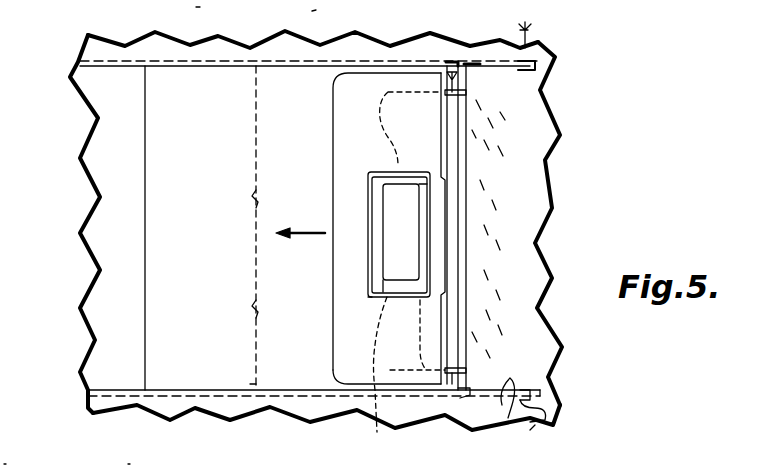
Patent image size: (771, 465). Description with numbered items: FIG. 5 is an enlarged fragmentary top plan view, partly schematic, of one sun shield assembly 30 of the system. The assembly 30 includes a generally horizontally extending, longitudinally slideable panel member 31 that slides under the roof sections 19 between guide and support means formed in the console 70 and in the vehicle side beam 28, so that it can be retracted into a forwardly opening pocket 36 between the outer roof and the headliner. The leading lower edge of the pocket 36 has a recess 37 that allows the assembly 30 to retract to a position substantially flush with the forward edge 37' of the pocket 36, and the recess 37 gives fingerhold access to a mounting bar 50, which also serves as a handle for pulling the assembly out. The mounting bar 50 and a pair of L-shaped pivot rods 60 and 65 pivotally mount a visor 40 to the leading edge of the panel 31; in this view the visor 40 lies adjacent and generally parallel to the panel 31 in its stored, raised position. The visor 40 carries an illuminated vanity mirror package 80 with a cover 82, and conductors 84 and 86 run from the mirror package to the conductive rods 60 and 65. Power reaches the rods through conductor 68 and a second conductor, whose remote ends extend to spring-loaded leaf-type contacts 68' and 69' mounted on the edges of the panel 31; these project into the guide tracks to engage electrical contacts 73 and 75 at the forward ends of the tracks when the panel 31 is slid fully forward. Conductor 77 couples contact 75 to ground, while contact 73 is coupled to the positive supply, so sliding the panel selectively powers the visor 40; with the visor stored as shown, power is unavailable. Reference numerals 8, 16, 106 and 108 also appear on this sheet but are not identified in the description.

The cabinet 8 is at (5, 456).
The drawer 16 is at (530, 30).
The roof sections 19 is at (129, 458).
The vehicle side beam 28 is at (540, 90).
The shield assembly 30 is at (498, 262).
The panel member 31 is at (304, 272).
The pocket 36 is at (178, 175).
The recess 37 is at (226, 228).
The forward edge of pocket 37' is at (227, 342).
The visor 40 is at (356, 345).
The mounting bar 50 is at (462, 213).
The pivot rod 60 is at (420, 95).
The pivot rod 65 is at (417, 335).
The conductor 68 is at (447, 38).
The spring-loaded contact 68' is at (473, 37).
The spring-loaded contact 69' is at (451, 422).
The console 70 is at (502, 405).
The electrical contact 73 is at (535, 65).
The electrical contact 75 is at (522, 390).
The conductor 77 is at (545, 410).
The illuminated vanity mirror package 80 is at (366, 294).
The cover 82 is at (395, 230).
The conductor 84 is at (382, 122).
The conductor 86 is at (381, 376).
The latch 106 is at (316, 10).
The latch arm 108 is at (192, 5).